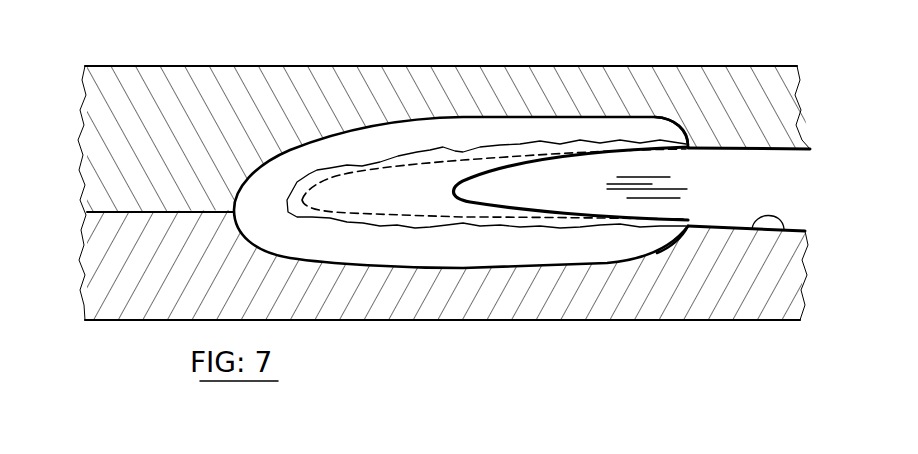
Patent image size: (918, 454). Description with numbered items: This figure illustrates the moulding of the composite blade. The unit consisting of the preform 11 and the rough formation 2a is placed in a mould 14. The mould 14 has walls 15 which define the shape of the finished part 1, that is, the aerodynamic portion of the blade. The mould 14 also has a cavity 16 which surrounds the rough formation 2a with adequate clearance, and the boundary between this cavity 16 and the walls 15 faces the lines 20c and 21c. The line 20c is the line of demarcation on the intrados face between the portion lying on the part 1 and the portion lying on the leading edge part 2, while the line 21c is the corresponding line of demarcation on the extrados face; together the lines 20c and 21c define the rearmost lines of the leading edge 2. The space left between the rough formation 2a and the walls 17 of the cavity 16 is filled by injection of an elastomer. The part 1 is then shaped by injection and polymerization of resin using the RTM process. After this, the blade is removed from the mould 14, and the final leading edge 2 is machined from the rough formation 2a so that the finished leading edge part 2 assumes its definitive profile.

The part 1 is at (797, 186).
The leading edge part 2 is at (466, 153).
The rough formation 2a is at (411, 157).
The preform 11 is at (670, 179).
The mould 14 is at (139, 66).
The walls 15 is at (760, 150).
The cavity 16 is at (275, 179).
The walls of the cavity 17 is at (316, 156).
The line of demarcation 20c is at (688, 228).
The line of demarcation 21c is at (688, 148).